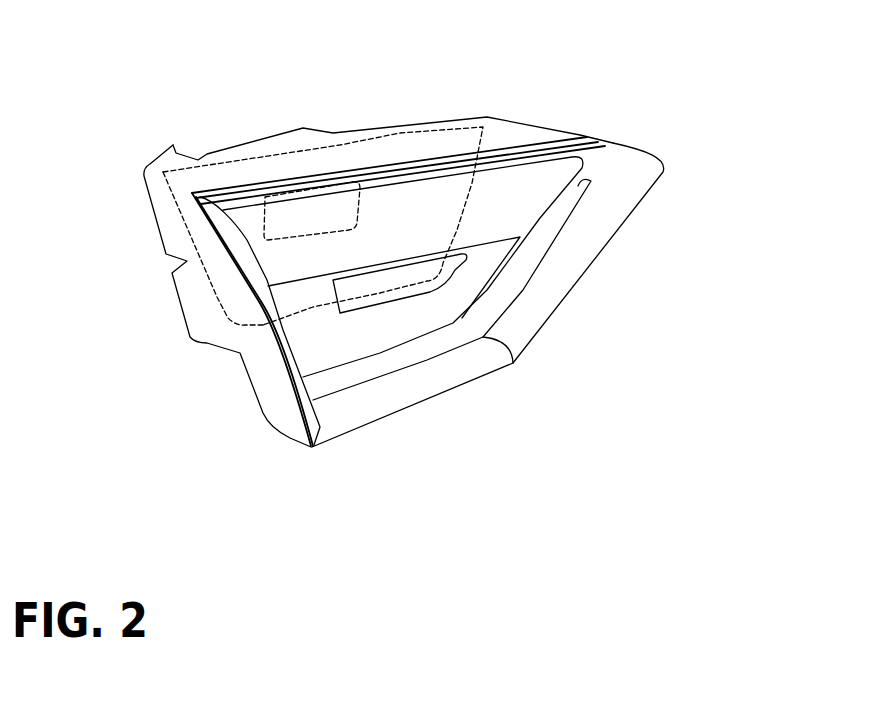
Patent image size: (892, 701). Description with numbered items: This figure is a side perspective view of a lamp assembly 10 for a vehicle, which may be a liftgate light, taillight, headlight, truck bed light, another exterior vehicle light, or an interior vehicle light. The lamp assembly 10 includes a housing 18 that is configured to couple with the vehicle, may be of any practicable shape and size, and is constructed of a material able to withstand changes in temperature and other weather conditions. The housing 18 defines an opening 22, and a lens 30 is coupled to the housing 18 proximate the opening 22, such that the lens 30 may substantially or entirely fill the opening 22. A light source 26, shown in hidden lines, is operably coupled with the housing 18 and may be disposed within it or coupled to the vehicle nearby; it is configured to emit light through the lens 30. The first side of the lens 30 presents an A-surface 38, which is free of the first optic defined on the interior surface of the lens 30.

The lamp assembly 10 is at (630, 96).
The housing 18 is at (511, 145).
The opening 22 is at (280, 347).
The light source 26 is at (336, 184).
The lens 30 is at (625, 223).
The A-surface 38 is at (510, 287).